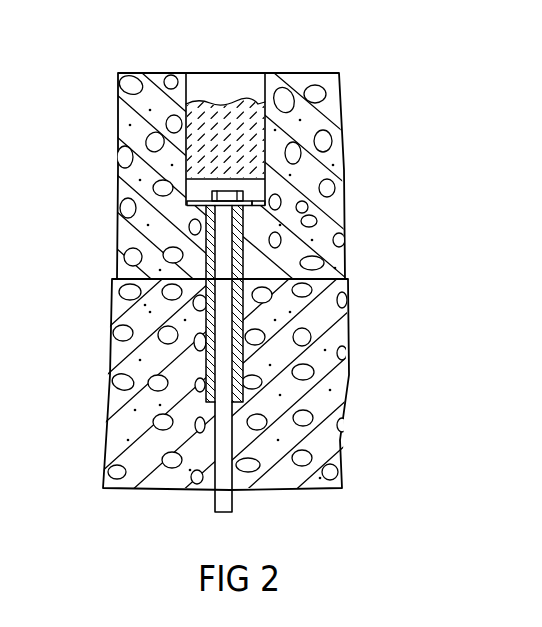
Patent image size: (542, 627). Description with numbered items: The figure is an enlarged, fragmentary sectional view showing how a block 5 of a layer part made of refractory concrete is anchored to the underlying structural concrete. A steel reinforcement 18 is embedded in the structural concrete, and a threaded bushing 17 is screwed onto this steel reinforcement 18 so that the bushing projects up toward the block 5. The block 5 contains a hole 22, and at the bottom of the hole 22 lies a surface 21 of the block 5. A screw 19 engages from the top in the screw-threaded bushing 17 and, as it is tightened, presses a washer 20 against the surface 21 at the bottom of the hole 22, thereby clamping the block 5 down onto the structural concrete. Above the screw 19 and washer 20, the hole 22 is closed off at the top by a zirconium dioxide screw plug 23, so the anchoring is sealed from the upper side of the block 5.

The block 5 is at (137, 124).
The threaded bushing 17 is at (210, 367).
The steel reinforcement 18 is at (220, 447).
The screw 19 is at (213, 197).
The washer 20 is at (254, 203).
The surface 21 is at (254, 204).
The hole 22 is at (266, 127).
The zirconium dioxide screw plug 23 is at (247, 84).